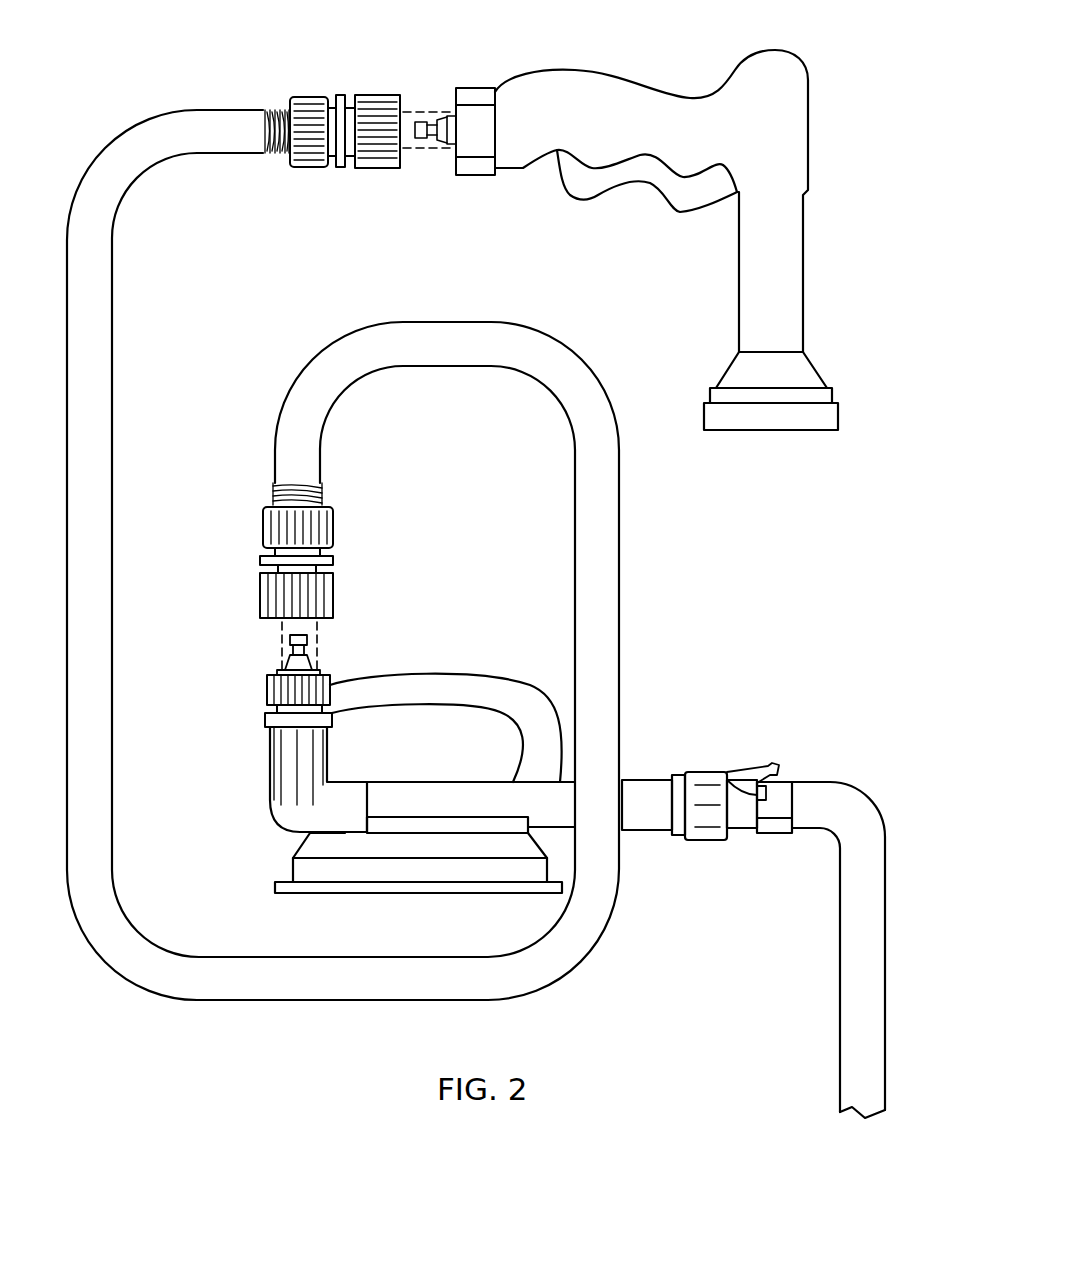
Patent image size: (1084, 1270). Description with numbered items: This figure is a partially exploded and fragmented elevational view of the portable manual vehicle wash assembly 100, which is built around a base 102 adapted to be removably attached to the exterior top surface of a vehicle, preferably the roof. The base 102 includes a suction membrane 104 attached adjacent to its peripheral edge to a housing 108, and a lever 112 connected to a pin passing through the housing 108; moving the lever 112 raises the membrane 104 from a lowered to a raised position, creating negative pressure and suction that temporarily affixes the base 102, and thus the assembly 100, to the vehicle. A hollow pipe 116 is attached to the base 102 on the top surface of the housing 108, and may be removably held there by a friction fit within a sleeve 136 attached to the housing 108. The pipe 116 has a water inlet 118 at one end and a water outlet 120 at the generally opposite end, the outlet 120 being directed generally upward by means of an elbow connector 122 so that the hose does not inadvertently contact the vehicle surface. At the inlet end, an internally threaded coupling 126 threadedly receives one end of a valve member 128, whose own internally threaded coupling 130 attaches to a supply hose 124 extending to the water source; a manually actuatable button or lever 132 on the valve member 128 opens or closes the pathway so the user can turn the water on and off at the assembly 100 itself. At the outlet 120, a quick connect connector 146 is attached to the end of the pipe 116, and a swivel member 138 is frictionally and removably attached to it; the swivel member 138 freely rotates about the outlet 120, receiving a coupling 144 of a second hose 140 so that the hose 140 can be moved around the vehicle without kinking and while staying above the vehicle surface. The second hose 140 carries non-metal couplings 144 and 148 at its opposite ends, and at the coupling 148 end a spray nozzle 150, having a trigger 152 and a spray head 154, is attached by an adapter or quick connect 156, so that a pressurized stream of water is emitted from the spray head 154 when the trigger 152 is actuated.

The assembly 100 is at (481, 642).
The base 102 is at (276, 851).
The suction membrane 104 is at (285, 890).
The housing 108 is at (378, 855).
The lever 112 is at (357, 690).
The hollow pipe 116 is at (407, 788).
The water inlet 118 is at (672, 835).
The water outlet 120 is at (270, 725).
The elbow connector 122 is at (285, 778).
The hose 124 is at (875, 975).
The internally threaded coupling 126 is at (700, 790).
The valve member 128 is at (740, 828).
The internally threaded coupling 130 is at (783, 787).
The manually actuatable button or lever 132 is at (772, 765).
The sleeve 136 is at (510, 826).
The swivel member 138 is at (265, 603).
The second hose 140 is at (620, 525).
The coupling 144 is at (262, 528).
The quick connect connector 146 is at (287, 668).
The coupling 148 is at (312, 105).
The spray nozzle 150 is at (664, 60).
The trigger 152 is at (597, 193).
The spray head 154 is at (775, 430).
The adapter or quick connect 156 is at (468, 118).